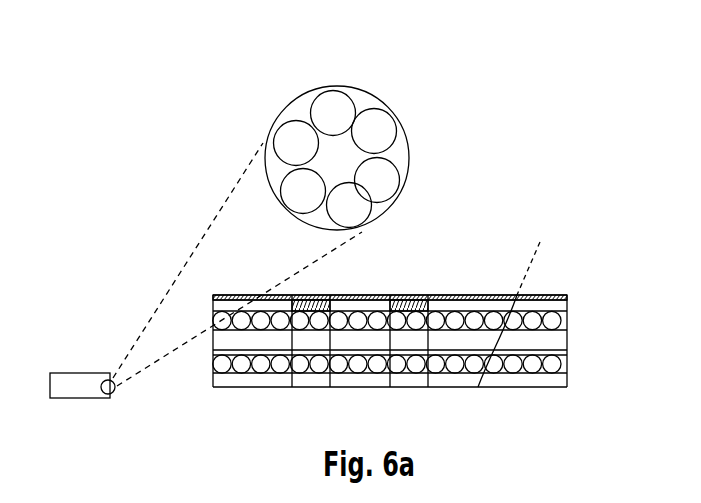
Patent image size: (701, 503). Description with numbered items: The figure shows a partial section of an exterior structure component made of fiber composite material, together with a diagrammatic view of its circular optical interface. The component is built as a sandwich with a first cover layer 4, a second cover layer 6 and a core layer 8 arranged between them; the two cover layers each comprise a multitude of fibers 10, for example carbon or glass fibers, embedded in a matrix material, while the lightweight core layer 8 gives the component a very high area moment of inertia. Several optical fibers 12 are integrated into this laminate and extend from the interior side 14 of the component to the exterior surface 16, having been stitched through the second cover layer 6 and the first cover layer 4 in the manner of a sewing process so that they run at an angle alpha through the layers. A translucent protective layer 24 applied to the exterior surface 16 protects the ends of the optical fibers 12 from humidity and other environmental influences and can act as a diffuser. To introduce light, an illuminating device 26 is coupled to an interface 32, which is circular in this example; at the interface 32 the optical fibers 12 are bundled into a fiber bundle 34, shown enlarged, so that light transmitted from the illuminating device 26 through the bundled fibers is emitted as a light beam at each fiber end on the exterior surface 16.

The first cover layer 4 is at (570, 320).
The second cover layer 6 is at (570, 364).
The core layer 8 is at (568, 350).
The fibers 10 is at (549, 323).
The optical fiber 12 is at (330, 108).
The interior side 14 is at (495, 388).
The exterior surface 16 is at (367, 296).
The protective layer 24 is at (550, 295).
The illuminating device 26 is at (60, 380).
The interface 32 is at (340, 142).
The fiber bundle 34 is at (347, 81).